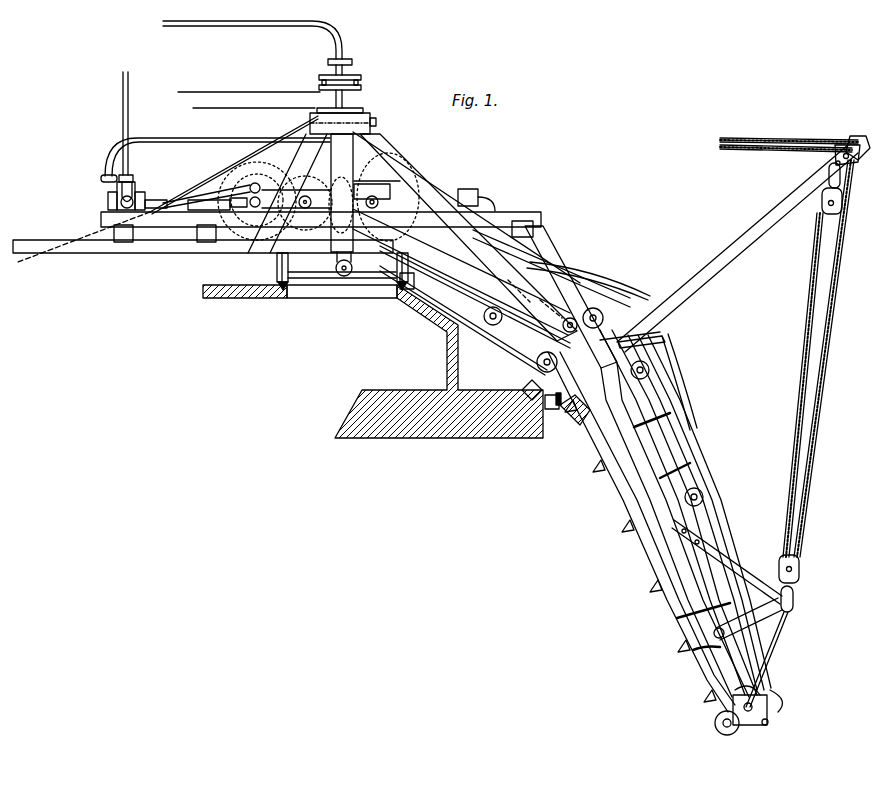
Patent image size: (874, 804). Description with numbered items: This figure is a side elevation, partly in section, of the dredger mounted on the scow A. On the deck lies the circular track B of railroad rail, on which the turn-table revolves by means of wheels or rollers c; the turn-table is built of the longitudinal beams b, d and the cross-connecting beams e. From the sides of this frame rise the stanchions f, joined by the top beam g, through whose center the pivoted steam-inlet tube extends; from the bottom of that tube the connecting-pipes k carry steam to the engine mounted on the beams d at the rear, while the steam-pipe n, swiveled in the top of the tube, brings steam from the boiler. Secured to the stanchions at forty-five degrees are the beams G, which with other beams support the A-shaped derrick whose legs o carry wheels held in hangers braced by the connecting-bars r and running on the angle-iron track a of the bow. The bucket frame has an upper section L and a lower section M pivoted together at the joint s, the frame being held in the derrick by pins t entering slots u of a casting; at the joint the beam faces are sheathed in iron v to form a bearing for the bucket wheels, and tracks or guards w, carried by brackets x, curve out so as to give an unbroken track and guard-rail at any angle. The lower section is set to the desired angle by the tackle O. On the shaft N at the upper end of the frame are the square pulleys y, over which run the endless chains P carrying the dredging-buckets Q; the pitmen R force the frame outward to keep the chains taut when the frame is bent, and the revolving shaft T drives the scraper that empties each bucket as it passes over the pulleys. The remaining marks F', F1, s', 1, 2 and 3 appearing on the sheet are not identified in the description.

The slots u is at (226, 28).
The frame rails F' is at (249, 101).
The connecting-pipes k is at (215, 160).
The post F1 is at (137, 141).
The longitudinal beams d is at (321, 218).
The longitudinal beams b is at (203, 246).
The cross-connecting beams e is at (323, 215).
The rod 2 is at (168, 189).
The pins t is at (287, 193).
The top beam g is at (343, 123).
The stanchions f is at (341, 193).
The gear s' is at (315, 196).
The pivot joint s is at (411, 265).
The shaft T is at (296, 208).
The pin 3 is at (310, 194).
The track a is at (457, 288).
The square pulleys y is at (778, 712).
The shaft N is at (388, 187).
The beams G is at (485, 250).
The upper section of bucket-frame L is at (461, 272).
The steam-pipe n is at (475, 297).
The wheels or rollers c is at (333, 271).
The circular track B is at (342, 278).
The scow A is at (373, 361).
The endless chains P is at (728, 540).
The dredging-buckets Q is at (732, 746).
The connecting-bars r is at (535, 311).
The pivot 1 is at (553, 371).
The tracks or guards w is at (590, 436).
The brackets x is at (660, 338).
The pitmen R is at (655, 498).
The lower section of bucket-frame M is at (675, 530).
The iron or steel sheathing v is at (695, 458).
The tackle O is at (749, 421).
The derrick-legs o is at (737, 248).